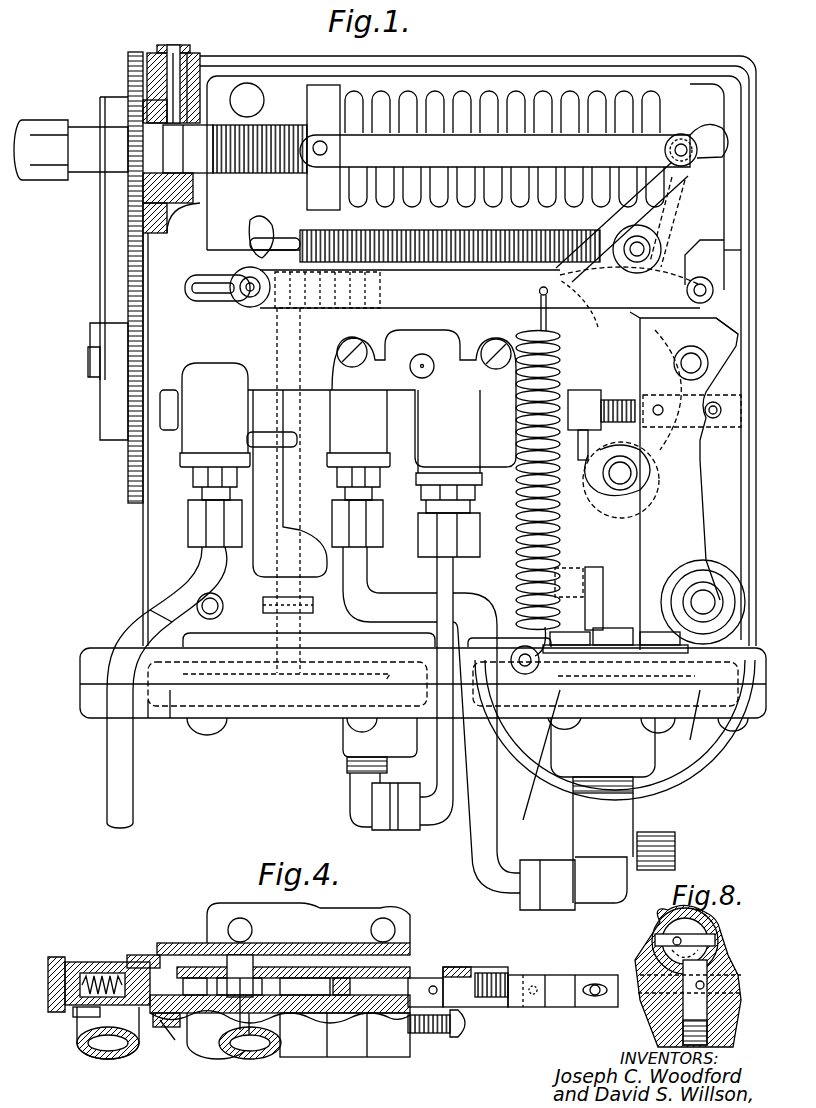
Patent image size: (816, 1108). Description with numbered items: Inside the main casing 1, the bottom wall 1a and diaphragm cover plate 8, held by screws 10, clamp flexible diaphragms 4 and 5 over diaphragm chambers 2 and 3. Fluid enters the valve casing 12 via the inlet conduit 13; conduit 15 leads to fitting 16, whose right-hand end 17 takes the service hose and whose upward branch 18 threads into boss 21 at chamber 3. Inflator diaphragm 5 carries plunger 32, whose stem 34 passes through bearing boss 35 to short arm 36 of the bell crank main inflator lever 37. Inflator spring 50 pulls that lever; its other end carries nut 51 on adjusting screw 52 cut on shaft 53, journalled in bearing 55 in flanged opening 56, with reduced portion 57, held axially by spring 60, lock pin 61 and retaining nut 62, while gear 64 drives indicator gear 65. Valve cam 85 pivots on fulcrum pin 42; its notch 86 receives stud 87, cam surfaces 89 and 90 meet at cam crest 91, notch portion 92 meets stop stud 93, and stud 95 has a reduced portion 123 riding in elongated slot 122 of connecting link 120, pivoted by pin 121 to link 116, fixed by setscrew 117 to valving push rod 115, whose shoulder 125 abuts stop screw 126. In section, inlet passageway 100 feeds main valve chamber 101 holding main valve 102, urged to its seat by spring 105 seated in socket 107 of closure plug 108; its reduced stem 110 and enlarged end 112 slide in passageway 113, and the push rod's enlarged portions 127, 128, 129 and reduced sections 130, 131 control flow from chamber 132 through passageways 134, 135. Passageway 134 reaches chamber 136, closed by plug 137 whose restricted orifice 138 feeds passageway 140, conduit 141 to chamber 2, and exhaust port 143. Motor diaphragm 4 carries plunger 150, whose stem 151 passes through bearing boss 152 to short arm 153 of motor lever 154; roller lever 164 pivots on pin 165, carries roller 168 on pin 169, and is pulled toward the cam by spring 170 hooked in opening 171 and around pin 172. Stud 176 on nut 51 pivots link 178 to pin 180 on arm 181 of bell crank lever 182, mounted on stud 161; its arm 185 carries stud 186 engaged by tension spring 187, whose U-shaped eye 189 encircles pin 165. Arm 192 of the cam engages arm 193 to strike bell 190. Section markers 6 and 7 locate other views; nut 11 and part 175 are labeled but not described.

In FIG. 1, the main casing 1 is at (745, 305).
In FIG. 1, the bottom wall 1a is at (87, 662).
In FIG. 1, the diaphragm chamber 2 is at (295, 706).
In FIG. 1, the diaphragm chamber 3 is at (530, 718).
In FIG. 1, the flexible diaphragm 4 is at (172, 718).
In FIG. 1, the flexible diaphragm 5 is at (537, 759).
In FIG. 4, the section line 6 is at (42, 983).
In FIG. 1, the section line 7 is at (428, 317).
In FIG. 1, the diaphragm cover plate 8 is at (155, 718).
In FIG. 1, the screws 10 is at (210, 726).
In FIG. 1, the pipe nut 11 is at (190, 510).
In FIG. 1, the valve casing 12 is at (348, 488).
In FIG. 8, the valve casing 12 is at (652, 925).
In FIG. 1, the inlet conduit 13 is at (107, 795).
In FIG. 1, the conduit 15 is at (472, 855).
In FIG. 1, the fitting 16 is at (606, 906).
In FIG. 1, the right-hand end 17 is at (660, 834).
In FIG. 1, the upward extending branch 18 is at (603, 840).
In FIG. 1, the boss 21 is at (650, 748).
In FIG. 1, the diaphragm plunger 32 is at (700, 726).
In FIG. 1, the axial stem 34 is at (615, 625).
In FIG. 1, the bearing boss 35 is at (688, 642).
In FIG. 1, the short arm 36 is at (660, 630).
In FIG. 1, the bell crank main inflator lever 37 is at (742, 210).
In FIG. 1, the fulcrum pin 42 is at (706, 602).
In FIG. 1, the inflator spring 50 is at (630, 95).
In FIG. 1, the nut 51 is at (307, 193).
In FIG. 1, the adjusting screw 52 is at (258, 175).
In FIG. 1, the shaft 53 is at (188, 149).
In FIG. 1, the bearing 55 is at (143, 188).
In FIG. 1, the flanged opening 56 is at (183, 210).
In FIG. 1, the reduced diameter portion 57 is at (170, 147).
In FIG. 1, the spring 60 is at (148, 92).
In FIG. 1, the lock pin 61 is at (195, 75).
In FIG. 1, the spring retaining nut 62 is at (162, 47).
In FIG. 1, the gear 64 is at (130, 58).
In FIG. 1, the gear 65 is at (130, 468).
In FIG. 1, the valve cam 85 is at (710, 470).
In FIG. 1, the notch 86 is at (735, 350).
In FIG. 1, the stud 87 is at (674, 363).
In FIG. 1, the cam surface 89 is at (638, 318).
In FIG. 1, the cam surface 90 is at (736, 288).
In FIG. 1, the cam crest 91 is at (713, 285).
In FIG. 1, the notch portion 92 is at (590, 490).
In FIG. 1, the stop stud 93 is at (617, 469).
In FIG. 1, the stud 95 is at (740, 420).
In FIG. 4, the inlet passageway 100 is at (115, 1050).
In FIG. 4, the main valve chamber 101 is at (108, 975).
In FIG. 4, the main valve 102 is at (150, 956).
In FIG. 4, the spring 105 is at (78, 1015).
In FIG. 4, the socket 107 is at (85, 965).
In FIG. 1, the closure plug 108 is at (168, 392).
In FIG. 4, the closure plug 108 is at (50, 978).
In FIG. 4, the reduced stem portion 110 is at (165, 1025).
In FIG. 4, the enlarged end portion 112 is at (195, 995).
In FIG. 4, the passageway 113 is at (195, 965).
In FIG. 4, the valving push rod 115 is at (225, 1000).
In FIG. 1, the link 116 is at (595, 388).
In FIG. 4, the link 116 is at (480, 972).
In FIG. 1, the setscrew 117 is at (582, 390).
In FIG. 4, the connecting link 120 is at (560, 975).
In FIG. 4, the pivot pin 121 is at (530, 998).
In FIG. 1, the elongated slot 122 is at (690, 428).
In FIG. 4, the elongated slot 122 is at (597, 983).
In FIG. 1, the reduced portion 123 is at (721, 410).
In FIG. 4, the reduced portion 123 is at (595, 996).
In FIG. 4, the shoulder 125 is at (445, 1030).
In FIG. 4, the stop screw 126 is at (466, 1035).
In FIG. 4, the enlarged portion 127 is at (242, 1030).
In FIG. 4, the enlarged portion 128 is at (300, 1020).
In FIG. 4, the enlarged portion 129 is at (390, 1000).
In FIG. 4, the reduced section 130 is at (258, 1050).
In FIG. 4, the reduced portion 131 is at (332, 1000).
In FIG. 4, the chamber 132 is at (172, 1030).
In FIG. 4, the passageway 134 is at (228, 915).
In FIG. 4, the passageway 135 is at (246, 965).
In FIG. 8, the chamber 136 is at (714, 950).
In FIG. 8, the closure plug 137 is at (705, 932).
In FIG. 8, the restricted orifice 138 is at (712, 940).
In FIG. 8, the passageway 140 is at (708, 985).
In FIG. 1, the conduit 141 is at (436, 575).
In FIG. 8, the exhaust port 143 is at (710, 975).
In FIG. 1, the diaphragm plunger 150 is at (250, 690).
In FIG. 1, the axial stem 151 is at (320, 612).
In FIG. 1, the bearing boss 152 is at (315, 630).
In FIG. 1, the short arm 153 is at (332, 530).
In FIG. 1, the motor lever 154 is at (272, 300).
In FIG. 1, the stud 161 is at (630, 245).
In FIG. 1, the roller lever 164 is at (478, 340).
In FIG. 1, the pin 165 is at (240, 300).
In FIG. 1, the roller 168 is at (690, 262).
In FIG. 1, the pin 169 is at (730, 262).
In FIG. 1, the spring 170 is at (516, 492).
In FIG. 1, the opening 171 is at (538, 292).
In FIG. 1, the pin 172 is at (515, 650).
In FIG. 1, the lever 175 is at (254, 250).
In FIG. 1, the stud 176 is at (315, 143).
In FIG. 1, the link 178 is at (495, 151).
In FIG. 1, the pin 180 is at (690, 146).
In FIG. 1, the arm 181 is at (660, 172).
In FIG. 1, the bell crank lever 182 is at (678, 186).
In FIG. 1, the arm 185 is at (570, 228).
In FIG. 1, the stud 186 is at (579, 307).
In FIG. 1, the tension spring 187 is at (382, 295).
In FIG. 1, the elongated U-shaped eye 189 is at (205, 278).
In FIG. 1, the bell 190 is at (712, 775).
In FIG. 1, the arm 192 is at (610, 570).
In FIG. 1, the arm 193 is at (605, 590).